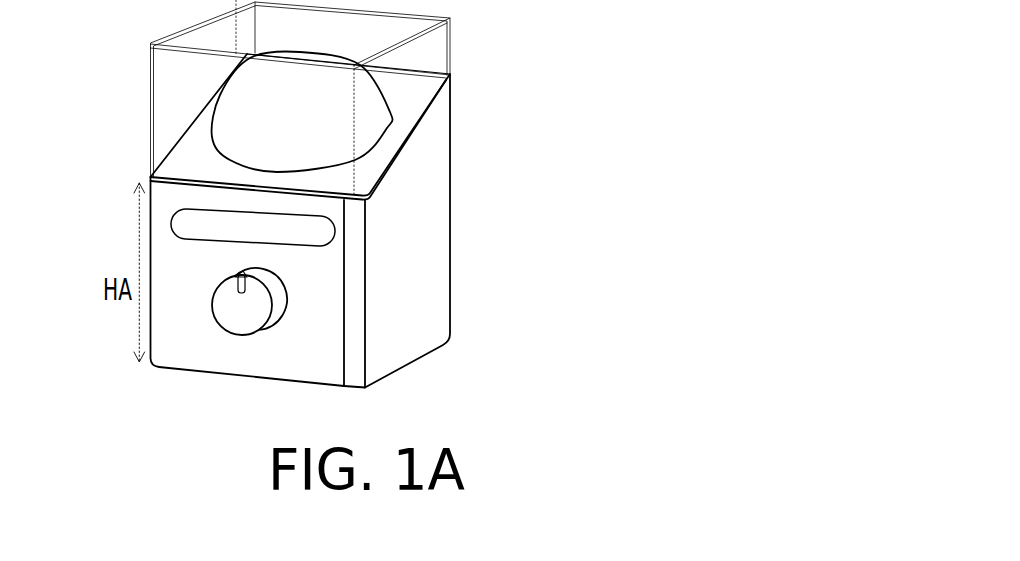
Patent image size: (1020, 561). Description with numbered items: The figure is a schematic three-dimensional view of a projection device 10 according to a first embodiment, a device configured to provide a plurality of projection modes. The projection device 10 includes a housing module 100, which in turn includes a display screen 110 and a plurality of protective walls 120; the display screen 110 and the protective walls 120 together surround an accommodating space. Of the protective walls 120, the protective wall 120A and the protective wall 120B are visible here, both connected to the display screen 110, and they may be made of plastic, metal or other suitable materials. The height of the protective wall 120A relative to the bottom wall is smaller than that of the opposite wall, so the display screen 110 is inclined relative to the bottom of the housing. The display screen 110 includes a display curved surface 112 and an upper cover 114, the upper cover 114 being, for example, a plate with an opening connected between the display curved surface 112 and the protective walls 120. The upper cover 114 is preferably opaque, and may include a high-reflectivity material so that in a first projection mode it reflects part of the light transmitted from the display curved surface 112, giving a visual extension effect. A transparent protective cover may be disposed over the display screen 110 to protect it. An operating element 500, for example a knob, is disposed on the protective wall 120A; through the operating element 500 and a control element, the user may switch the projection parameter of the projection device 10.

The housing module 100 is at (528, 90).
The display screen 110 is at (559, 117).
The display curved surface 112 is at (313, 102).
The upper cover 114 is at (373, 162).
The protective walls 120 is at (395, 237).
The protective wall 120A is at (323, 287).
The protective wall 120B is at (432, 272).
The operating element 500 is at (232, 312).
The projection device 10 is at (718, 443).